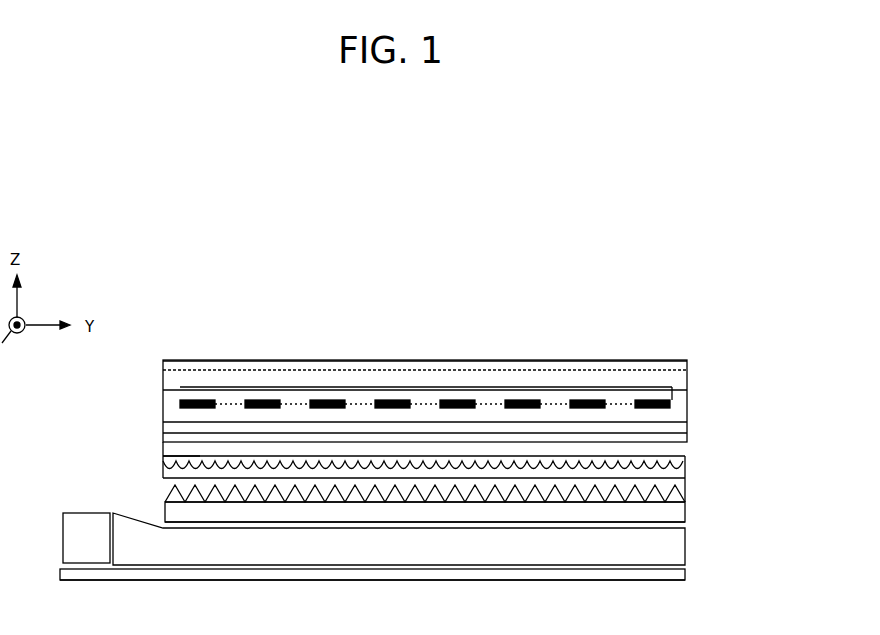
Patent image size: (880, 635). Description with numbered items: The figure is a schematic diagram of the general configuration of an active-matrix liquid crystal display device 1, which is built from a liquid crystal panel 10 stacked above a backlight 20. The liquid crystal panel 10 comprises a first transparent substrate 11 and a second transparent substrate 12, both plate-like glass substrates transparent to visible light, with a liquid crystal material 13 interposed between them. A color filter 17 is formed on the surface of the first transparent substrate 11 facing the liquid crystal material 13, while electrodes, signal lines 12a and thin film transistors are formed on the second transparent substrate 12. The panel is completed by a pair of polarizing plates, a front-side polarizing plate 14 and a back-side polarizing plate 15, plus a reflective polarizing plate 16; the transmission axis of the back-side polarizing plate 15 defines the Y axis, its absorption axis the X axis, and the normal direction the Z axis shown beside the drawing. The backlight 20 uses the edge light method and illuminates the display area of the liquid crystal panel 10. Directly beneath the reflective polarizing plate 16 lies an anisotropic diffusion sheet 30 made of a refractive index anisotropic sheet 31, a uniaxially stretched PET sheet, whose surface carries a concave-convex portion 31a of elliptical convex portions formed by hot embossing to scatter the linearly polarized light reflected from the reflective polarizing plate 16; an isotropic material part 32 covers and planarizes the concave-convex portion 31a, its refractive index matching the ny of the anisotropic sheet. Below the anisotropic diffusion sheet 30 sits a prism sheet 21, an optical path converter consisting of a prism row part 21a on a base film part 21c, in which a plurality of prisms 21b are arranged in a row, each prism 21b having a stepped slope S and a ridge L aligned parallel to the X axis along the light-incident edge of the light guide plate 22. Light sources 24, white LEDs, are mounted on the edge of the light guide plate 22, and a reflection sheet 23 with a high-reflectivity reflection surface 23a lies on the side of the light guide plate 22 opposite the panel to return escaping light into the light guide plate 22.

The liquid crystal display device 1 is at (441, 198).
The liquid crystal panel 10 is at (775, 293).
The first transparent substrate 11 is at (687, 373).
The second transparent substrate 12 is at (687, 390).
The signal lines 12a is at (457, 400).
The liquid crystal material 13 is at (384, 398).
The front-side polarizing plate 14 is at (687, 362).
The back-side polarizing plate 15 is at (687, 413).
The reflective polarizing plate 16 is at (687, 432).
The color filter 17 is at (330, 387).
The backlight 20 is at (775, 443).
The prism sheet 21 is at (687, 495).
The prism row part 21a is at (293, 500).
The prism 21b is at (248, 503).
The base film part 21c is at (535, 512).
The light guide plate 22 is at (670, 547).
The reflection sheet 23 is at (687, 575).
The reflection surface 23a is at (652, 580).
The light source 24 is at (98, 523).
The anisotropic diffusion sheet 30 is at (687, 462).
The refractive index anisotropic sheet 31 is at (163, 477).
The concave-convex portion 31a is at (163, 462).
The isotropic material part 32 is at (165, 454).
The slope S is at (410, 503).
The ridge L is at (458, 483).